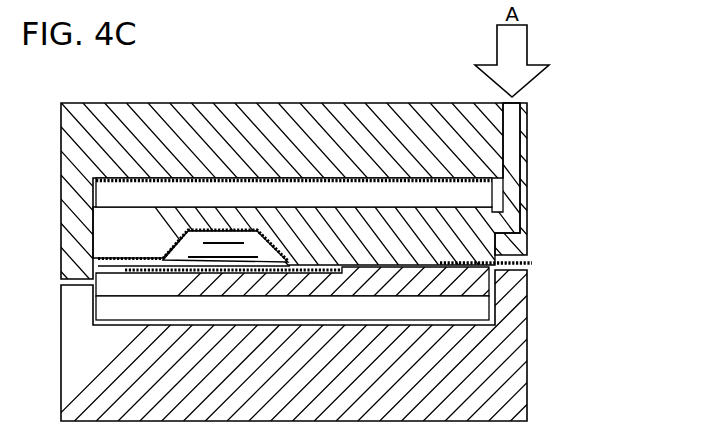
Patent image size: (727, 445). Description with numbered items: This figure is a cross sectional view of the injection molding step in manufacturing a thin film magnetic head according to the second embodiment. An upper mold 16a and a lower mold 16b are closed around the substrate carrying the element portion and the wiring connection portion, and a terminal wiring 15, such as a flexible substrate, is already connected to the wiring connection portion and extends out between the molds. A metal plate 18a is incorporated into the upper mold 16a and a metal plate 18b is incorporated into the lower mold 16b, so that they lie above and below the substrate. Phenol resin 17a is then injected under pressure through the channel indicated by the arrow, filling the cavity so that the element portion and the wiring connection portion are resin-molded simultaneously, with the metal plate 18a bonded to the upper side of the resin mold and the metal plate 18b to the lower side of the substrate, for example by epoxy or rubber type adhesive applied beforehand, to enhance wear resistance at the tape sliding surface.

The mold 16a is at (130, 125).
The metal plate 18a is at (318, 190).
The phenol resin 17a is at (449, 233).
The terminal wiring 15 is at (532, 262).
The metal plate 18b is at (429, 308).
The mold 16b is at (499, 388).